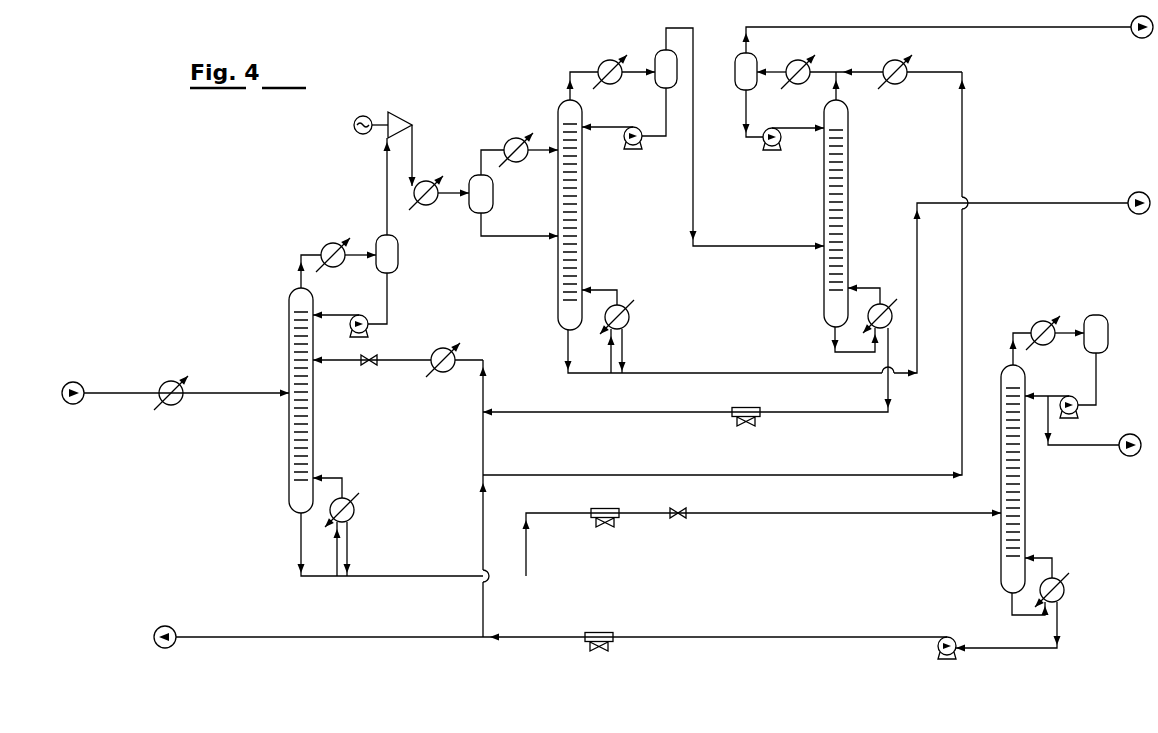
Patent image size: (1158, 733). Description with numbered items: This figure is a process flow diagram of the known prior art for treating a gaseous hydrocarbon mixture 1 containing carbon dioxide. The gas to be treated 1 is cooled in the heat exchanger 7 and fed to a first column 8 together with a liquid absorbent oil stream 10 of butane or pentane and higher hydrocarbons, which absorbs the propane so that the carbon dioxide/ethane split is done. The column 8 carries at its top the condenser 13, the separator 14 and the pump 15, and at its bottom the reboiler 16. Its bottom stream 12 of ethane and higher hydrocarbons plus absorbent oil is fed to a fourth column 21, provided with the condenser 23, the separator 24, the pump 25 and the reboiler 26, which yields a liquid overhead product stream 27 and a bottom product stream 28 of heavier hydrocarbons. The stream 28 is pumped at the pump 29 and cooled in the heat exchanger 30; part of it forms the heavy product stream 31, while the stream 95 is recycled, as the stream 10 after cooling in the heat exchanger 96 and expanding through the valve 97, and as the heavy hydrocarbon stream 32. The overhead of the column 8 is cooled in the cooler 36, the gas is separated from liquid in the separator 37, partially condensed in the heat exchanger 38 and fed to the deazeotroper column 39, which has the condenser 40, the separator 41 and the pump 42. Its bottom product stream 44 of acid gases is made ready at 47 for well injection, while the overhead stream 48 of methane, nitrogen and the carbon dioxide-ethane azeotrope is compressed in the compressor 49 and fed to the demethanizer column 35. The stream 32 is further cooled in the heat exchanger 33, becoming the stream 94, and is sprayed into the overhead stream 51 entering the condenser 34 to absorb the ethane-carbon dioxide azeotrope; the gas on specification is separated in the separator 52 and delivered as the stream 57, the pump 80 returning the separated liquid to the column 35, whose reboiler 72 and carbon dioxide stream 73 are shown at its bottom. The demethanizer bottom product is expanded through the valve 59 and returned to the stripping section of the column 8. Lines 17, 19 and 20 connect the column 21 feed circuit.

The gaseous hydrocarbon mixture 1 is at (82, 387).
The heat exchanger 7 is at (167, 406).
The column 8 is at (313, 414).
The absorbent oil stream 10 is at (337, 361).
The bottom stream 12 is at (355, 576).
The condenser 13 is at (333, 243).
The separator 14 is at (398, 253).
The pump 15 is at (366, 332).
The reboiler 16 is at (354, 509).
The line 17 is at (527, 553).
The flow control valve 19 is at (603, 530).
The valve 20 is at (679, 520).
The column 21 is at (1025, 504).
The condenser 23 is at (1046, 321).
The separator 24 is at (1108, 334).
The pump 25 is at (1076, 416).
The reboiler 26 is at (1064, 595).
The overhead product stream 27 is at (1126, 458).
The bottom product stream 28 is at (1030, 648).
The pump 29 is at (936, 651).
The heat exchanger 30 is at (606, 631).
The heavy product stream 31 is at (175, 628).
The heavy hydrocarbon stream 32 is at (963, 93).
The heat exchanger 33 is at (896, 85).
The condenser 34 is at (798, 85).
The demethanizer column 35 is at (848, 209).
The cooler 36 is at (426, 206).
The separator 37 is at (493, 196).
The partial condenser 38 is at (515, 137).
The deazeotroper column 39 is at (582, 205).
The condenser 40 is at (609, 60).
The separator 41 is at (656, 55).
The pump 42 is at (634, 148).
The bottom product stream 44 is at (635, 373).
The injection stream 47 is at (1131, 215).
The overhead product stream 48 is at (690, 22).
The compressor 49 is at (399, 113).
The overhead stream 51 is at (838, 104).
The separator 52 is at (735, 73).
The delivered gas stream 57 is at (1138, 39).
The valve 59 is at (746, 431).
The reboiler 72 is at (887, 305).
The carbon dioxide stream 73 is at (876, 420).
The pump 80 is at (772, 150).
The cooled heavy hydrocarbon stream 94 is at (874, 72).
The recycle stream 95 is at (484, 591).
The heat exchanger 96 is at (443, 372).
The expansion valve 97 is at (369, 366).